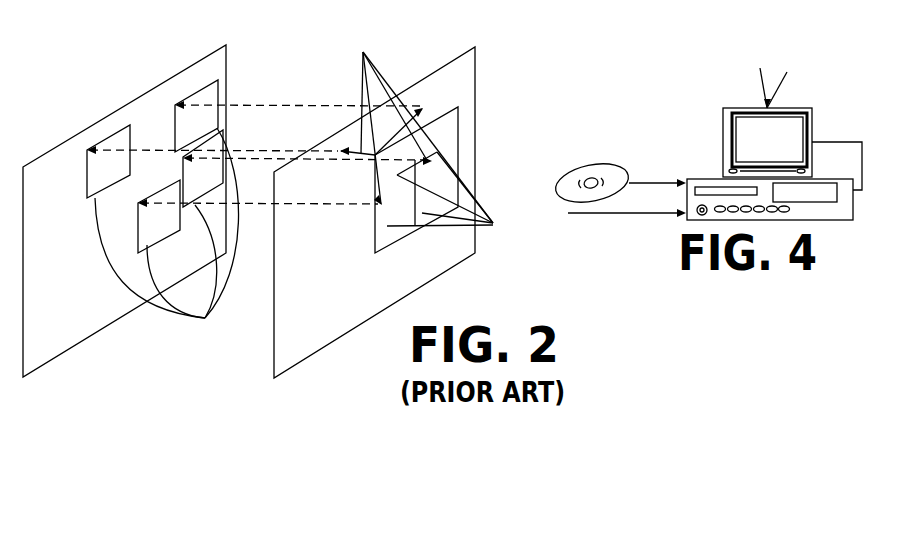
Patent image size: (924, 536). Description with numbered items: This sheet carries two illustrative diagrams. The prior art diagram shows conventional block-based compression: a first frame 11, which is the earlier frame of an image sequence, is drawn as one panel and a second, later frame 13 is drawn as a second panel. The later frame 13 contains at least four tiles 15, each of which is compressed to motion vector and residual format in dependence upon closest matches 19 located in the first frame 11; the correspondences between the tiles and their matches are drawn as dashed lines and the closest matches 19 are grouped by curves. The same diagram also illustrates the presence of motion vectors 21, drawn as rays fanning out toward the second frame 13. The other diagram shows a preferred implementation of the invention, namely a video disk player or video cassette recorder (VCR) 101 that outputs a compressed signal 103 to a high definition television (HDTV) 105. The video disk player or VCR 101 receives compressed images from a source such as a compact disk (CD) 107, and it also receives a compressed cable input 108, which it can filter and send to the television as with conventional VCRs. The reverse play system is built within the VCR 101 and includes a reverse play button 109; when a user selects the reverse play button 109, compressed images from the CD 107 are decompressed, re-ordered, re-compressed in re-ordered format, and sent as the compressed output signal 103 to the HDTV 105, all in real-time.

In FIG. 2, the first frame 11 is at (132, 105).
In FIG. 2, the second frame 13 is at (475, 143).
In FIG. 2, the tiles 15 is at (458, 196).
In FIG. 2, the closest matches 19 is at (168, 235).
In FIG. 2, the motion vectors 21 is at (412, 126).
In FIG. 4, the video disk player or video cassette recorder (VCR) 101 is at (684, 177).
In FIG. 4, the compressed signal 103 is at (843, 142).
In FIG. 4, the high definition television (HDTV) 105 is at (723, 145).
In FIG. 4, the compact disk (CD) 107 is at (615, 163).
In FIG. 4, the compressed cable input 108 is at (630, 215).
In FIG. 4, the reverse play button 109 is at (784, 212).